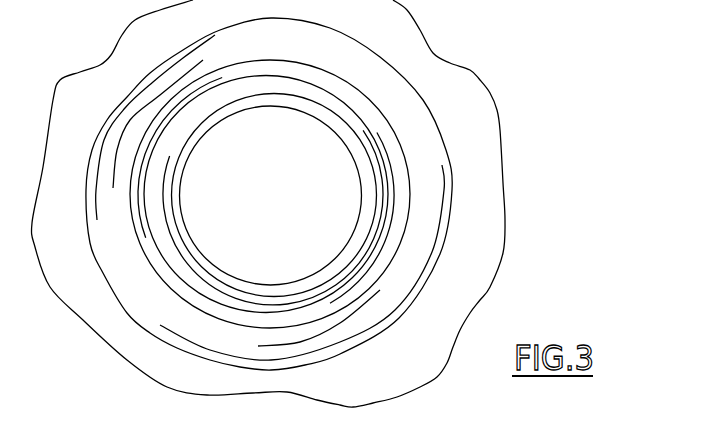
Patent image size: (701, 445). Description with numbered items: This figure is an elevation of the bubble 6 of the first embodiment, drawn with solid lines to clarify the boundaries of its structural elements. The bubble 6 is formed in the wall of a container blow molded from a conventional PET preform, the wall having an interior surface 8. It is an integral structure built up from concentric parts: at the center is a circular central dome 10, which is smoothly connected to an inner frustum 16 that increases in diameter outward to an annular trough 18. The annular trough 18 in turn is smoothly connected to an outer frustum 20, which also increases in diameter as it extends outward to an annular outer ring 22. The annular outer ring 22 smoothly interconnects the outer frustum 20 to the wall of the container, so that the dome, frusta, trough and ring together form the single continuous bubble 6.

The bubble 6 is at (460, 185).
The interior surface 8 is at (487, 130).
The circular central dome 10 is at (288, 205).
The inner frustum 16 is at (325, 108).
The annular trough 18 is at (367, 136).
The outer frustum 20 is at (383, 262).
The annular outer ring 22 is at (445, 230).